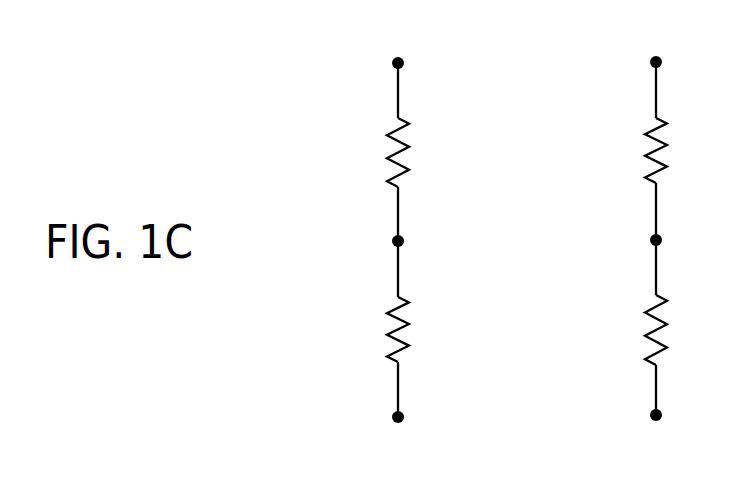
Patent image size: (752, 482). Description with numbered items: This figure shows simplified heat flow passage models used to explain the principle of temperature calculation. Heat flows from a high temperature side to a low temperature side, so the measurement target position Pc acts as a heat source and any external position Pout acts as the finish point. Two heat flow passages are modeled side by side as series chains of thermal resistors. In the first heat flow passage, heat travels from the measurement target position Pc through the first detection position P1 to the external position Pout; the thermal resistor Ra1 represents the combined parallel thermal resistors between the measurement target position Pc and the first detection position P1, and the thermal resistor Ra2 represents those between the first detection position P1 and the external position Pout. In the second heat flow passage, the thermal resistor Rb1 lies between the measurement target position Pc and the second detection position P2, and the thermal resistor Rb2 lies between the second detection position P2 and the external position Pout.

The external position Pout is at (527, 48).
The measurement target position Pc is at (528, 433).
The first detection position P1 is at (383, 240).
The second detection position P2 is at (640, 239).
The thermal resistor Ra1 is at (420, 329).
The thermal resistor Ra2 is at (420, 152).
The thermal resistor Rb1 is at (678, 330).
The thermal resistor Rb2 is at (676, 150).